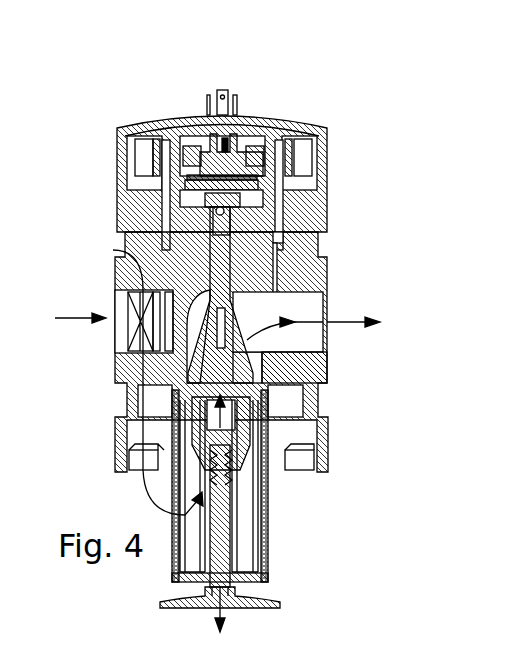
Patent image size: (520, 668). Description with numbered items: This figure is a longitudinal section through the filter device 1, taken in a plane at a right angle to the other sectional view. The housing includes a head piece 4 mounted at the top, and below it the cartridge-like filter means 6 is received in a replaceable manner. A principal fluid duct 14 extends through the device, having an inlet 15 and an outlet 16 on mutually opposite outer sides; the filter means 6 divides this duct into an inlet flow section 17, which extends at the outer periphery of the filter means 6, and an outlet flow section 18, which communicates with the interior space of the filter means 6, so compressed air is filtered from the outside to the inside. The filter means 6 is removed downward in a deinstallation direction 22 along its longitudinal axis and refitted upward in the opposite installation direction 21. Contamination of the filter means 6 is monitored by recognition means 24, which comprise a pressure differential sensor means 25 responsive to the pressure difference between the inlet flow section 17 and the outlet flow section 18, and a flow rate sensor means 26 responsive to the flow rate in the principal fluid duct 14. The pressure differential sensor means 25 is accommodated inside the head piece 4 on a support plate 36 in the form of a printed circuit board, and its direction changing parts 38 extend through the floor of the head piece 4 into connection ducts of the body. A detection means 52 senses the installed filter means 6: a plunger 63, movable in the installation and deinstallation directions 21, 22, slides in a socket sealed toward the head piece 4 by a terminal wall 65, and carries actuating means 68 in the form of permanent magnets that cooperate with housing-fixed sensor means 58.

The filter device 1 is at (260, 334).
The head piece 4 is at (125, 130).
The filter means 6 is at (270, 505).
The principal fluid duct 14 is at (130, 244).
The inlet 15 is at (115, 300).
The outlet 16 is at (305, 338).
The inlet flow section 17 is at (112, 352).
The outlet flow section 18 is at (327, 363).
The installation direction 21 is at (268, 437).
The deinstallation direction 22 is at (225, 539).
The recognition means 24 is at (222, 146).
The pressure differential sensor means 25 is at (244, 140).
The flow rate sensor means 26 is at (118, 330).
The support plate 36 is at (205, 150).
The direction changing parts 38 is at (152, 157).
The detection means 52 is at (318, 223).
The sensor means 58 is at (320, 164).
The plunger 63 is at (232, 208).
The terminal wall 65 is at (322, 197).
The actuating means 68 is at (215, 212).